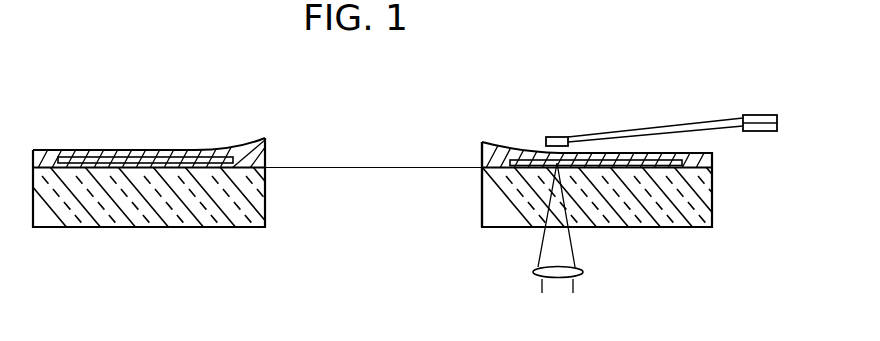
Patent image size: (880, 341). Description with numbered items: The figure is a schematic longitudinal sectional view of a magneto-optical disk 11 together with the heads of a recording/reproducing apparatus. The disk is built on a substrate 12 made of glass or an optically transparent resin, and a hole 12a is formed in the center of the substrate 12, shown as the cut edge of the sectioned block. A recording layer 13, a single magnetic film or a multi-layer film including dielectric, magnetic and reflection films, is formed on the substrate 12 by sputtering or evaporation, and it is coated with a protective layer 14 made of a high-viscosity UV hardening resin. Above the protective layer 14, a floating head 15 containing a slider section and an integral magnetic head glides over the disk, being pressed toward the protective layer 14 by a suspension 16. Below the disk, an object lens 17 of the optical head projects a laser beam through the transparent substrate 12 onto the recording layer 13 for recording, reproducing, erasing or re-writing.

The magneto-optical disk 11 is at (200, 236).
The substrate 12 is at (703, 193).
The hole 12a is at (482, 197).
The recording layer 13 is at (683, 153).
The protective layer 14 is at (480, 155).
The floating head 15 is at (549, 136).
The suspension 16 is at (628, 130).
The object lens 17 is at (583, 268).